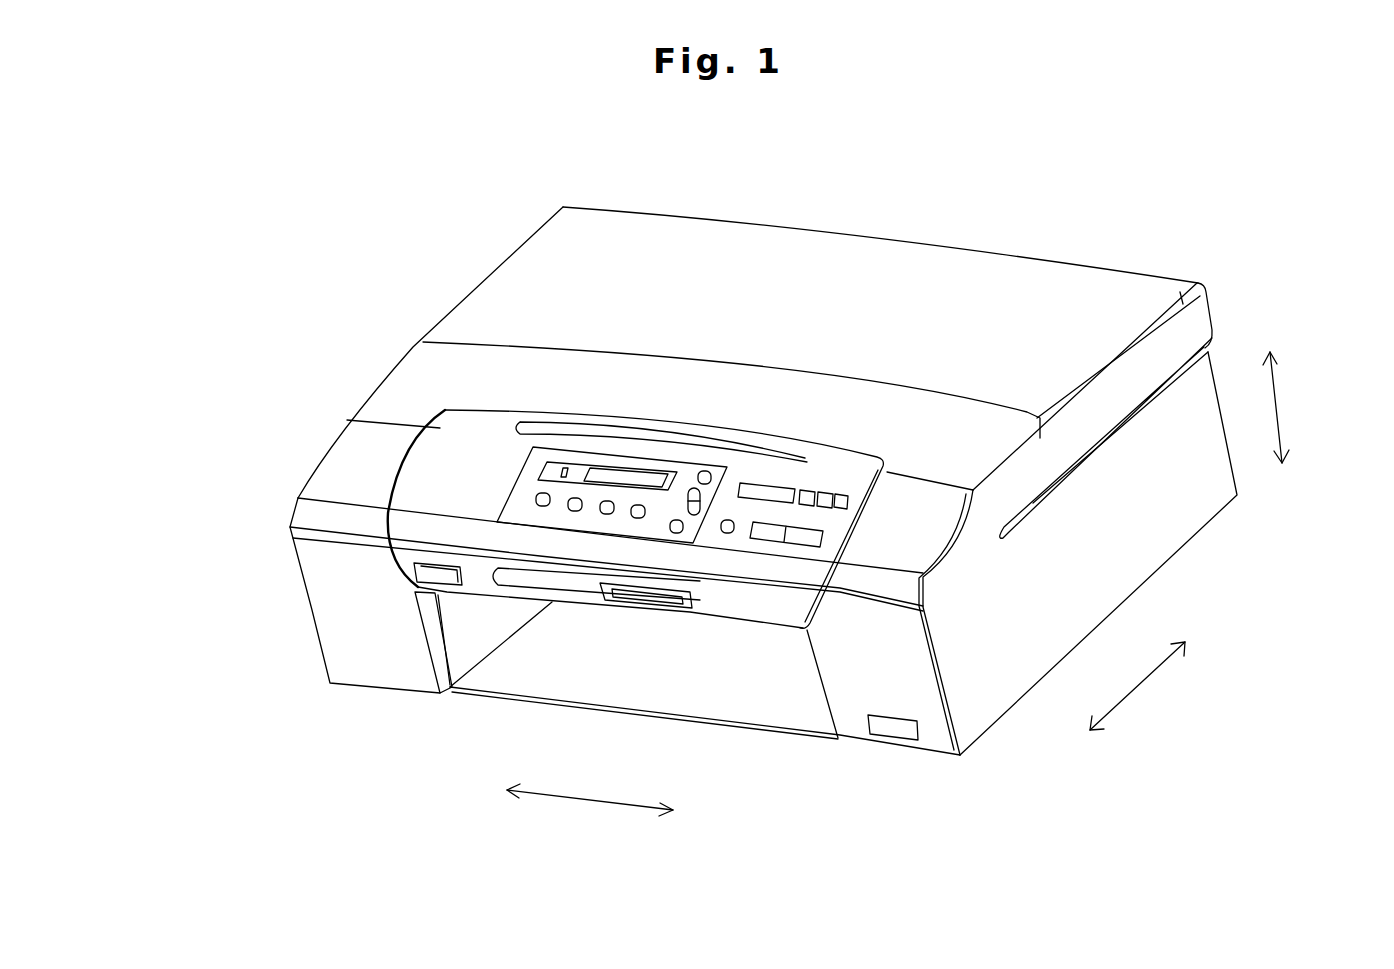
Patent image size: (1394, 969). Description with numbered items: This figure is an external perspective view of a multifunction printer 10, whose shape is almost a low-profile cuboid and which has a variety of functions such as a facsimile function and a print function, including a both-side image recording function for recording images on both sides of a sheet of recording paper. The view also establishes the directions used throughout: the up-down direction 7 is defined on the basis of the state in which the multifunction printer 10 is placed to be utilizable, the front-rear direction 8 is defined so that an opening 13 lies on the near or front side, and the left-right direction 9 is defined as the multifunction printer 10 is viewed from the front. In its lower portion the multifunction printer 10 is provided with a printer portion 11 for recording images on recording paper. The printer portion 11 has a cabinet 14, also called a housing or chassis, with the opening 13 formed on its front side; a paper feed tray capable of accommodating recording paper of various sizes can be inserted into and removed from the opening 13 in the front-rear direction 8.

The up-down direction 7 is at (1275, 403).
The front-rear direction 8 is at (1133, 692).
The left-right direction 9 is at (577, 800).
The multifunction printer 10 is at (393, 230).
The printer portion 11 is at (297, 637).
The opening 13 is at (462, 635).
The cabinet 14 is at (1165, 513).